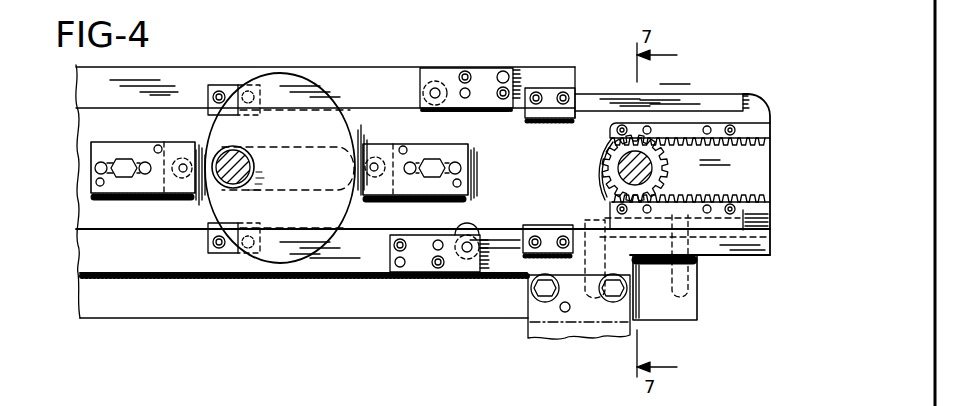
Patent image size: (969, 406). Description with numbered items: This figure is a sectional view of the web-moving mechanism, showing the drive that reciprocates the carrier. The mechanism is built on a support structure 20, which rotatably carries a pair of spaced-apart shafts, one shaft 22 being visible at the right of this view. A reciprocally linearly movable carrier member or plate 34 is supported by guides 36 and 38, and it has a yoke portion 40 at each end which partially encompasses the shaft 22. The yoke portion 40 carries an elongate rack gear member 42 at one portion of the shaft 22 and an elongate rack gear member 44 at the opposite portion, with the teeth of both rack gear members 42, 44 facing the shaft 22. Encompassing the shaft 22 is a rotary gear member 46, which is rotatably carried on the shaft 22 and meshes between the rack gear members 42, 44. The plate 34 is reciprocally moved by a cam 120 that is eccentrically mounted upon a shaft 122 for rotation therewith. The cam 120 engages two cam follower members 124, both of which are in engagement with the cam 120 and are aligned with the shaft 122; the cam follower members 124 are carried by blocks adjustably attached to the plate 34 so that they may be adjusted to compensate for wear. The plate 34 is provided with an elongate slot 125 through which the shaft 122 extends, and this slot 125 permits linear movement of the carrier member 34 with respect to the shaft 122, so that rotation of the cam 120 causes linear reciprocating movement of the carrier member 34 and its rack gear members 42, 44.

The support structure 20 is at (88, 285).
The shaft 22 is at (640, 168).
The carrier member or plate 34 is at (85, 218).
The guide 36 is at (438, 72).
The guide 38 is at (228, 85).
The yoke portion 40 is at (698, 111).
The rack gear member 42 is at (757, 128).
The rack gear member 44 is at (770, 211).
The rotary gear member 46 is at (664, 178).
The cam 120 is at (292, 80).
The shaft 122 is at (238, 160).
The cam follower member 124 is at (177, 142).
The elongate slot 125 is at (296, 151).